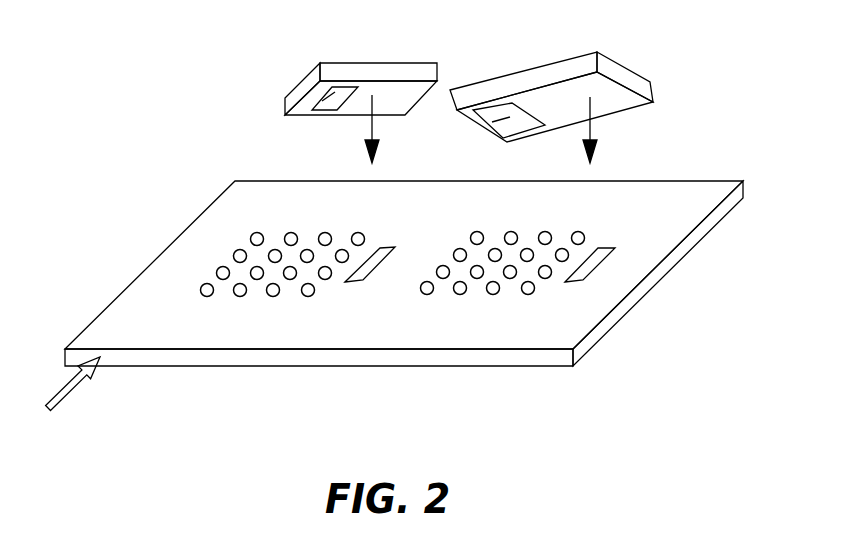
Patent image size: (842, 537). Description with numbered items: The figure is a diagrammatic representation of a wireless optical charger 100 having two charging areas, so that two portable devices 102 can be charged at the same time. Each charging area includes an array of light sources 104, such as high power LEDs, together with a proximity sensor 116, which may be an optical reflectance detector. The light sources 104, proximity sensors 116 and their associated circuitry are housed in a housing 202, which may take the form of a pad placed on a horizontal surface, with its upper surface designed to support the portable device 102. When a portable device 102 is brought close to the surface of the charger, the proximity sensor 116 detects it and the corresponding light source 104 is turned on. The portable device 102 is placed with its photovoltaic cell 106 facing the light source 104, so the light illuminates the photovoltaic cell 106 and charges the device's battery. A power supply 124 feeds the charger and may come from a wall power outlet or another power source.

The wireless optical charger 100 is at (650, 360).
The portable device 102 is at (351, 63).
The array of light sources 104 is at (192, 298).
The photovoltaic cell 106 is at (310, 108).
The proximity sensor 116 is at (390, 247).
The power supply 124 is at (72, 392).
The housing 202 is at (203, 214).